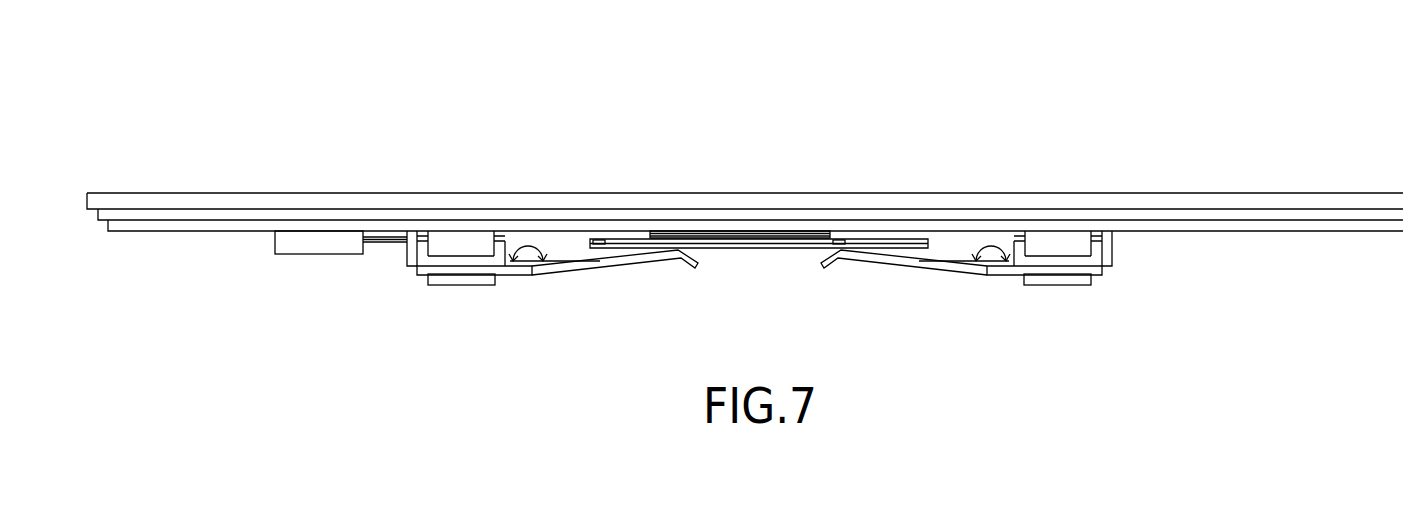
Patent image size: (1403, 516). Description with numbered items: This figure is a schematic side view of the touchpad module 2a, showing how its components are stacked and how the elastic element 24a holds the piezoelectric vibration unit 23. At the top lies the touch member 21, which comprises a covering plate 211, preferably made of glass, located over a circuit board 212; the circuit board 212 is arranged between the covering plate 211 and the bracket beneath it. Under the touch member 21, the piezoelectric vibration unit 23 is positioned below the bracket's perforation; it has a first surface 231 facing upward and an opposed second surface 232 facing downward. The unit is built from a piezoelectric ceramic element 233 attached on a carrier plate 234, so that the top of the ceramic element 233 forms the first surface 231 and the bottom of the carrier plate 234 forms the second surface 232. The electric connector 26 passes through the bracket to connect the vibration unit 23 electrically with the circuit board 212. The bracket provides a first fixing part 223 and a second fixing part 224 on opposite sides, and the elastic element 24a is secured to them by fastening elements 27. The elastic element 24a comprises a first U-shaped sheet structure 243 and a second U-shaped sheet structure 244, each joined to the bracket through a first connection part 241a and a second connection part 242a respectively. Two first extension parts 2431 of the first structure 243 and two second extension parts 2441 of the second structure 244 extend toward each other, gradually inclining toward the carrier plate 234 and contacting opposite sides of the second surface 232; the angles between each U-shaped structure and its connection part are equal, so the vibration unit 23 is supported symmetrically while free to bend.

The touchpad module 2a is at (1115, 57).
The touch member 21 is at (1320, 148).
The covering plate 211 is at (1250, 202).
The circuit board 212 is at (1143, 215).
The piezoelectric vibration unit 23 is at (195, 5).
The first surface 231 is at (806, 234).
The second surface 232 is at (760, 250).
The piezoelectric ceramic element 233 is at (759, 243).
The carrier plate 234 is at (740, 234).
The elastic element 24a is at (338, 5).
The first extension parts 2431 is at (662, 252).
The first U-shaped sheet structure 243 is at (615, 262).
The second extension parts 2441 is at (859, 253).
The second U-shaped sheet structure 244 is at (904, 262).
The first connection part 241a is at (501, 272).
The second connection part 242a is at (1018, 272).
The electric connector 26 is at (322, 244).
The first fixing part 223 is at (416, 262).
The second fixing part 224 is at (1098, 262).
The fastening elements 27 is at (468, 278).